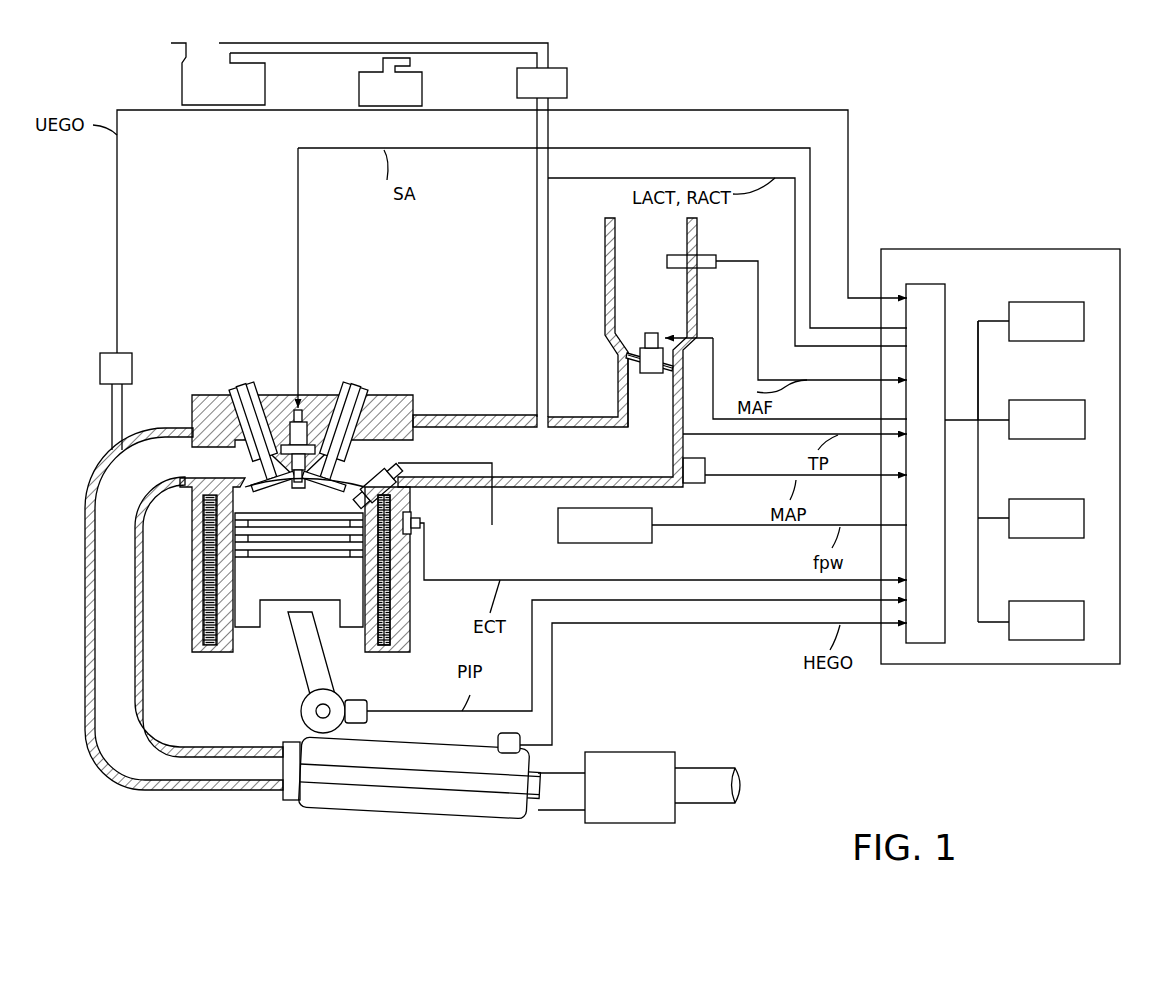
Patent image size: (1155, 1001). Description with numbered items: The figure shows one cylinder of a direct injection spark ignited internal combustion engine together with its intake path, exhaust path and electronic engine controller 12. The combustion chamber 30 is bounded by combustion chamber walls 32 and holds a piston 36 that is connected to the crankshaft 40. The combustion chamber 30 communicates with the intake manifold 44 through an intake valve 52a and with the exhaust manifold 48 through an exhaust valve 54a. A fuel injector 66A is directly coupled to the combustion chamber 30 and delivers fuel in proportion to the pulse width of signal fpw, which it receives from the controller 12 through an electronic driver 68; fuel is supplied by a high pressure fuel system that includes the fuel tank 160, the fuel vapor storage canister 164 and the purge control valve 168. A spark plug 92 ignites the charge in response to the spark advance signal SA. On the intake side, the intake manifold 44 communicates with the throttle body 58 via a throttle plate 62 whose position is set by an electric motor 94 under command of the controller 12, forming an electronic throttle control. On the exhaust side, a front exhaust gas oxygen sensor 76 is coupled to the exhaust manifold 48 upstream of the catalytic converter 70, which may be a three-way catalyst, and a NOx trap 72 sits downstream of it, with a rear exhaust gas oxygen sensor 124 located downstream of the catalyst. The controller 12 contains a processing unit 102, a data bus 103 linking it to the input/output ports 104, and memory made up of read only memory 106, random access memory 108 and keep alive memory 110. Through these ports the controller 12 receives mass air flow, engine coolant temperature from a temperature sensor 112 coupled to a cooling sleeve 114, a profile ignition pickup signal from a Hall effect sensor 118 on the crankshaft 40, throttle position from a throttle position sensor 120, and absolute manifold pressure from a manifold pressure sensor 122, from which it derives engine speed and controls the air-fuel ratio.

The electronic engine controller 12 is at (1055, 249).
The combustion chamber 30 is at (265, 520).
The combustion chamber walls 32 is at (230, 653).
The piston 36 is at (287, 590).
The crankshaft 40 is at (302, 713).
The intake manifold 44 is at (587, 460).
The exhaust manifold 48 is at (100, 527).
The intake valve 52a is at (348, 475).
The exhaust valve 54a is at (252, 476).
The throttle body 58 is at (634, 398).
The throttle plate 62 is at (632, 355).
The fuel injector 66A is at (400, 474).
The electronic driver 68 is at (654, 514).
The catalytic converter 70 is at (372, 745).
The NOx trap 72 is at (632, 752).
The front exhaust gas oxygen sensor 76 is at (108, 353).
The spark plug 92 is at (288, 435).
The electric motor 94 is at (656, 333).
The processing unit 102 is at (1062, 400).
The data bus 103 is at (990, 324).
The input/output ports 104 is at (945, 300).
The read only memory 106 is at (1055, 302).
The random access memory 108 is at (1062, 499).
The keep alive memory 110 is at (1062, 601).
The temperature sensor 112 is at (420, 516).
The cooling sleeve 114 is at (398, 615).
The Hall effect sensor 118 is at (368, 704).
The throttle position sensor 120 is at (636, 364).
The manifold pressure sensor 122 is at (707, 465).
The rear exhaust gas oxygen sensor 124 is at (497, 741).
The fuel tank 160 is at (268, 88).
The fuel vapor storage canister 164 is at (424, 90).
The purge control valve 168 is at (569, 82).